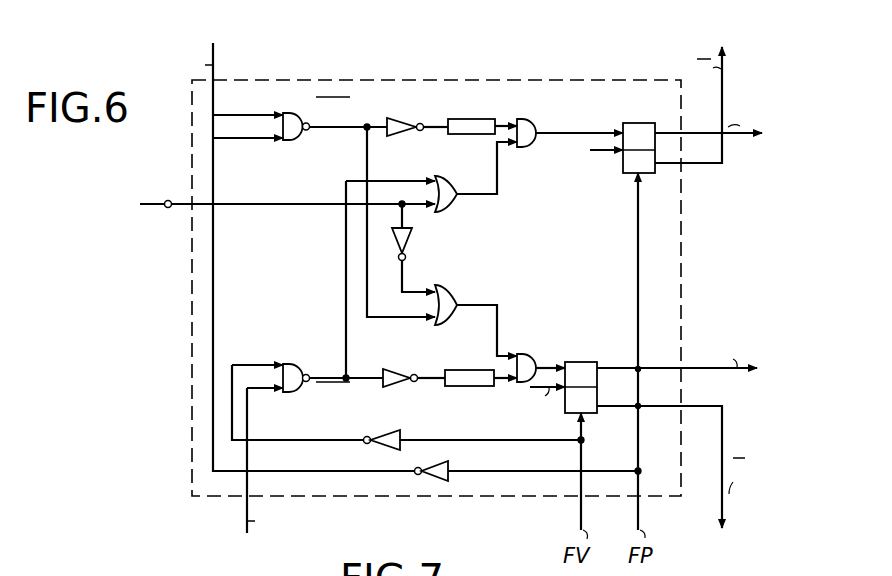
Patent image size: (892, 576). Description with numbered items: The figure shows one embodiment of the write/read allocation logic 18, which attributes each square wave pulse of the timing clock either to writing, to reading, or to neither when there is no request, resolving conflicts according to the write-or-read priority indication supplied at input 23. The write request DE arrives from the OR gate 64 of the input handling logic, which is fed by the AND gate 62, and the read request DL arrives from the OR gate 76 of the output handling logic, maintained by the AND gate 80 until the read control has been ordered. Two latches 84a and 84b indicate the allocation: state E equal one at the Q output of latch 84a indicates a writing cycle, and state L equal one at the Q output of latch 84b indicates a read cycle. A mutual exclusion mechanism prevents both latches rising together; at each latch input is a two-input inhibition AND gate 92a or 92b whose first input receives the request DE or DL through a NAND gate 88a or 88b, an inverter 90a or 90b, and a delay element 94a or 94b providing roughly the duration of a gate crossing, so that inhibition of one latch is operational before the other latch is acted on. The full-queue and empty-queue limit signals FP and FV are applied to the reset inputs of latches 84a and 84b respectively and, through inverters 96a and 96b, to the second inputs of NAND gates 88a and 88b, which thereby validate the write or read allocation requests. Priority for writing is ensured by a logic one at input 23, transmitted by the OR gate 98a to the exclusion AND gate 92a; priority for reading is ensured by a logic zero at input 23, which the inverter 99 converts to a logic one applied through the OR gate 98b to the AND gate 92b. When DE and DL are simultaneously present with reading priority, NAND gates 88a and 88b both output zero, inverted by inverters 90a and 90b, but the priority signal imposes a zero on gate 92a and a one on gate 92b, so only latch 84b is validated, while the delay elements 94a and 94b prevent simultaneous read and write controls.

The write/read allocation logic 18 is at (192, 332).
The priority input 23 is at (165, 214).
The AND gate 62 is at (722, 50).
The OR gate 64 is at (218, 51).
The OR gate 76 is at (245, 533).
The AND gate 80 is at (722, 534).
The latch 84a is at (622, 173).
The latch 84b is at (582, 360).
The NAND gate 88a is at (285, 140).
The NAND gate 88b is at (286, 359).
The inverter 90a is at (402, 119).
The inverter 90b is at (393, 368).
The inhibition AND gate 92a is at (540, 113).
The inhibition AND gate 92b is at (530, 353).
The delay element 94a is at (469, 119).
The delay element 94b is at (460, 369).
The inverter 96a is at (442, 461).
The inverter 96b is at (386, 431).
The OR gate 98a is at (452, 172).
The OR gate 98b is at (458, 283).
The inverter 99 is at (410, 240).